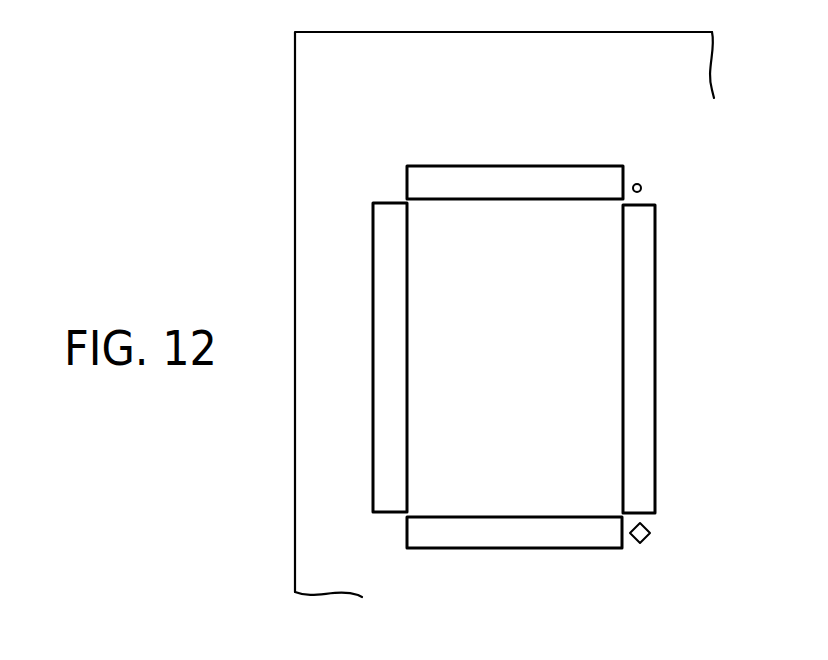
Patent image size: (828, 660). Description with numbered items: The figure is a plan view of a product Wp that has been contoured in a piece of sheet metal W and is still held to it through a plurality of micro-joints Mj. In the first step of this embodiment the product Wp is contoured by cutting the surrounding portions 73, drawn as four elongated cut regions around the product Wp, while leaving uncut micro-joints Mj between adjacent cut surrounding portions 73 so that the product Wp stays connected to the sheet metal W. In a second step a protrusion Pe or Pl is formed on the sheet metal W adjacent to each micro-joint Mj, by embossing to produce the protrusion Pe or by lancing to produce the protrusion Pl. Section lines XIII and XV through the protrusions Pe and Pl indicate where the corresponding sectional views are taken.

The surrounding portions 73 is at (494, 173).
The sheet metal W is at (295, 363).
The product Wp is at (521, 375).
The micro-joints Mj is at (412, 207).
The protrusion Pe is at (642, 188).
The protrusion Pl is at (636, 546).
The section line XIII is at (648, 172).
The section line XV is at (610, 508).